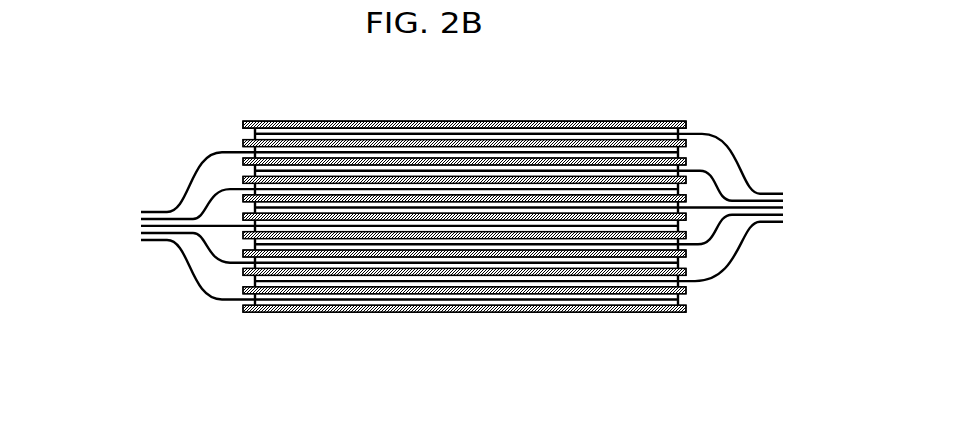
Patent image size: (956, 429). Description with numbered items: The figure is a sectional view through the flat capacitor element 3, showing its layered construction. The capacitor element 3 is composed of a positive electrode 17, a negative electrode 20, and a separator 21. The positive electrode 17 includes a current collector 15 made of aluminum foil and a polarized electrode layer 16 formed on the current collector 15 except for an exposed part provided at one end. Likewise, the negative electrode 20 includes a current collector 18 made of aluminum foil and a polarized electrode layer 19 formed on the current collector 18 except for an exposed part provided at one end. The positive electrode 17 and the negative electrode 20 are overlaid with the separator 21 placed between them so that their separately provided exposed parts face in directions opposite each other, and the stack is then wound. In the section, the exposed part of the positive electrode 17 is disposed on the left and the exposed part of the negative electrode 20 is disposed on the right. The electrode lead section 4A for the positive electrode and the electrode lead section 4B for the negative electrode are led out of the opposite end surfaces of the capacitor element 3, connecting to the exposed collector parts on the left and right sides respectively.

The capacitor element 3 is at (600, 98).
The current collector 15 is at (247, 144).
The polarized electrode layer 16 is at (222, 152).
The positive electrode 17 is at (141, 104).
The current collector 18 is at (686, 125).
The polarized electrode layer 19 is at (672, 134).
The negative electrode 20 is at (780, 90).
The separator 21 is at (622, 312).
The electrode lead section 4A is at (152, 227).
The electrode lead section 4B is at (777, 217).